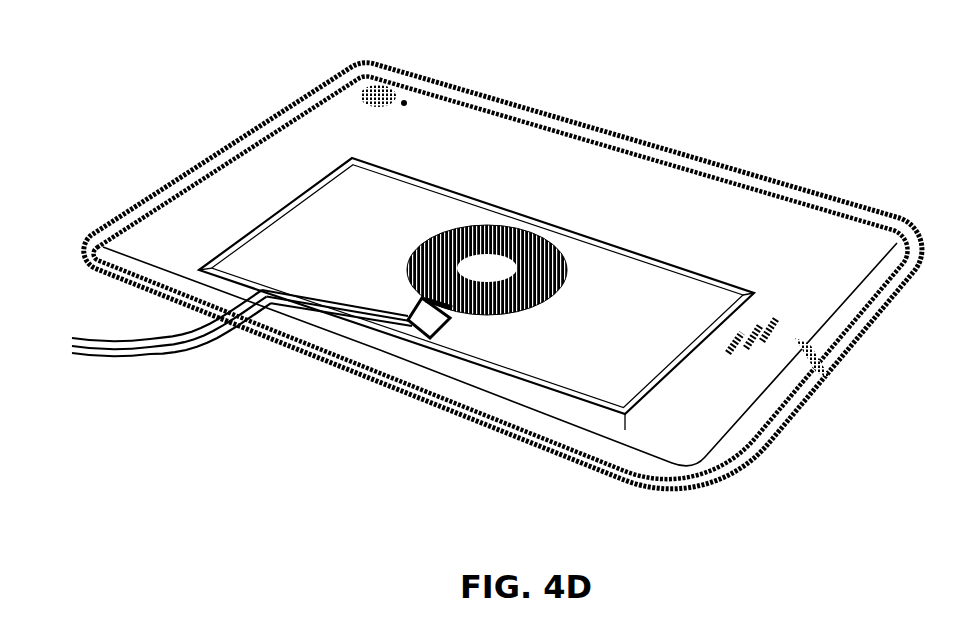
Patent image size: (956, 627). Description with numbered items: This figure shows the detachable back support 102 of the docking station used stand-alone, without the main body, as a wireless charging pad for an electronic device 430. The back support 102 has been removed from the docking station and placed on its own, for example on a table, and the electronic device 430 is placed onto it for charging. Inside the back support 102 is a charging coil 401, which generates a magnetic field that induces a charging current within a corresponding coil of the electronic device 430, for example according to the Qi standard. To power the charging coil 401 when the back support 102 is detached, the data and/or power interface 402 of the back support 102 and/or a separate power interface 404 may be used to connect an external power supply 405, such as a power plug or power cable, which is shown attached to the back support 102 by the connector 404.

The electronic device 430 is at (541, 150).
The back support 102 is at (476, 348).
The charging coil 401 is at (537, 258).
The data and/or power interface 402 is at (400, 333).
The separate power interface 404 is at (266, 292).
The external power supply 405 is at (150, 355).